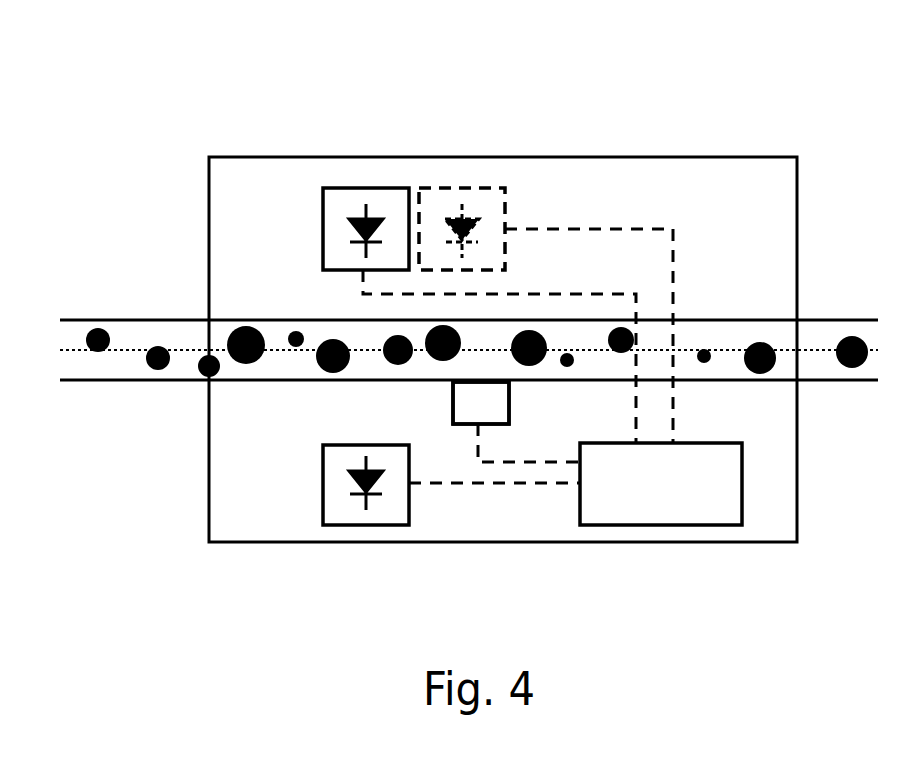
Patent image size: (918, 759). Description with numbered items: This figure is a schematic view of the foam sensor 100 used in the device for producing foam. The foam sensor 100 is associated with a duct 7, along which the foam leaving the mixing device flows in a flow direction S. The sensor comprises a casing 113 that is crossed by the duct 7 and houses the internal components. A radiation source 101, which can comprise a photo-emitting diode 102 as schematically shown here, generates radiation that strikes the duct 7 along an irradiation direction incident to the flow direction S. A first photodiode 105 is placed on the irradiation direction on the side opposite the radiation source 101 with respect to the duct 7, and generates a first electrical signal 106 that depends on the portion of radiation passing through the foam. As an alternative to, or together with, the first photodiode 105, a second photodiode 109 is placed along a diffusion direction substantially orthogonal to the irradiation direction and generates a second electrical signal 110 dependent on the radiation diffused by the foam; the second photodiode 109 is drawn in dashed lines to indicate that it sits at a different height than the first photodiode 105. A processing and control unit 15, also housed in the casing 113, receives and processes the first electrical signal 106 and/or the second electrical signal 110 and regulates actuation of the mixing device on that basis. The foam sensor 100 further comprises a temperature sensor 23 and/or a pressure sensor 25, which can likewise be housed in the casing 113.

The foam sensor 100 is at (152, 48).
The casing 113 is at (208, 208).
The duct 7 is at (110, 318).
The flow direction S is at (110, 352).
The first photodiode 105 is at (357, 178).
The second photodiode 109 is at (455, 180).
The first electrical signal 106 is at (535, 294).
The second electrical signal 110 is at (626, 229).
The temperature sensor 23 is at (461, 438).
The pressure sensor 25 is at (481, 403).
The radiation source 101 is at (358, 538).
The photo-emitting diode 102 is at (348, 489).
The processing and control unit 15 is at (653, 538).